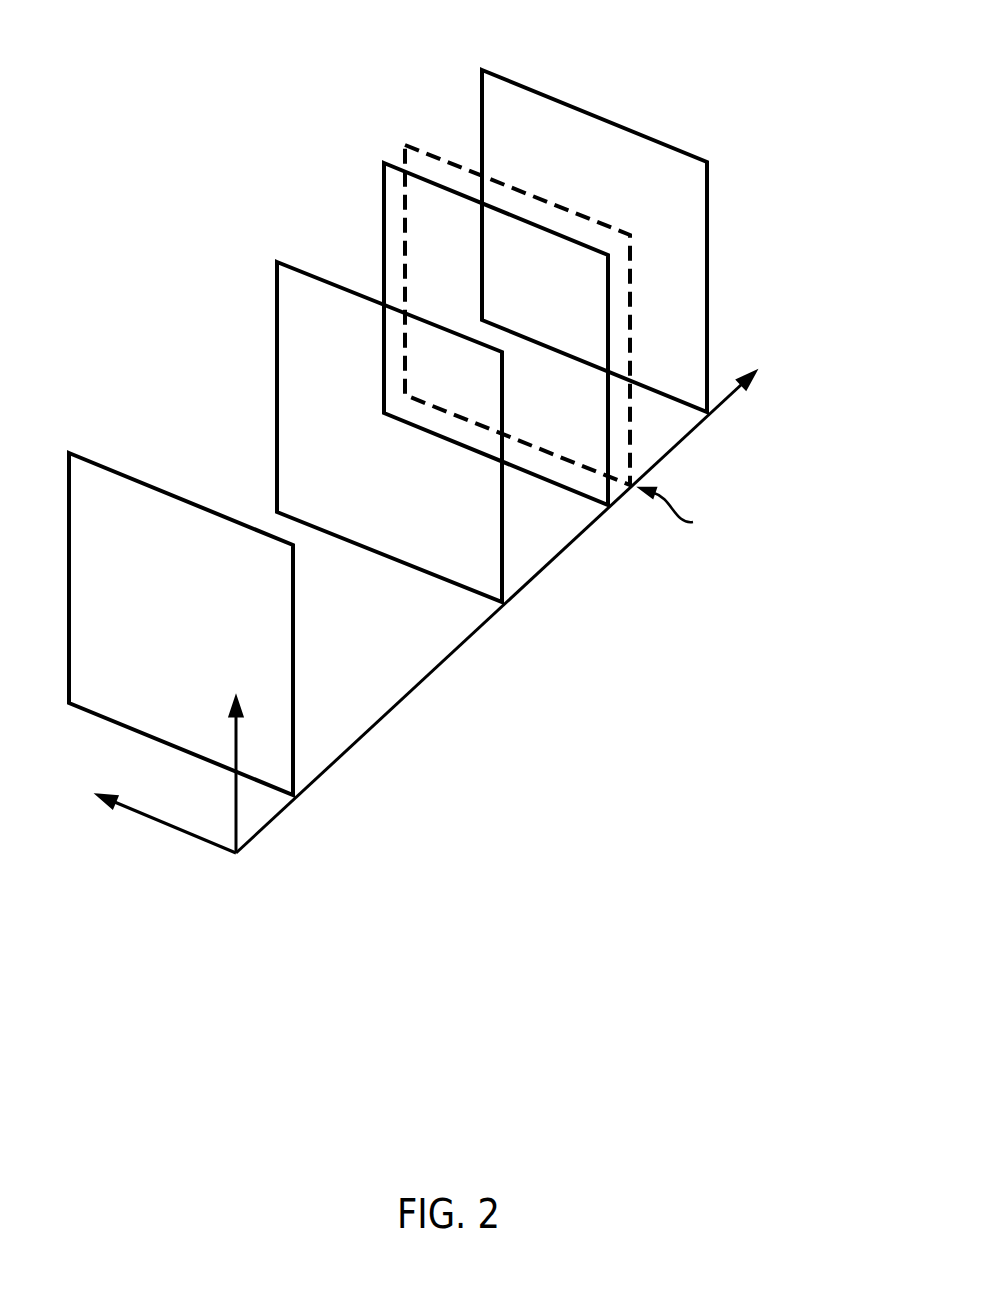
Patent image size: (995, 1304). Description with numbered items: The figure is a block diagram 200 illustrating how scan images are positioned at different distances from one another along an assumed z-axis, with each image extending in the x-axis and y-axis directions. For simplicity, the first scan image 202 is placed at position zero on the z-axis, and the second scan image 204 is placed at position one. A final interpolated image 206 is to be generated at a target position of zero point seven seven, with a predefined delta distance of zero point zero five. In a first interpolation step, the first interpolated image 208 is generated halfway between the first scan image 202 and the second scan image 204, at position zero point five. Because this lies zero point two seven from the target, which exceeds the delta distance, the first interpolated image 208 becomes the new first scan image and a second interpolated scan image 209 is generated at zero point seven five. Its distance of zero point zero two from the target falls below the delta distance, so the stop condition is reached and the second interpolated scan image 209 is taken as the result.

The block diagram 200 is at (130, 75).
The first scan image 202 is at (148, 562).
The second scan image 204 is at (568, 158).
The final interpolated image 206 is at (412, 117).
The first interpolated image 208 is at (352, 358).
The second interpolated scan image 209 is at (376, 146).